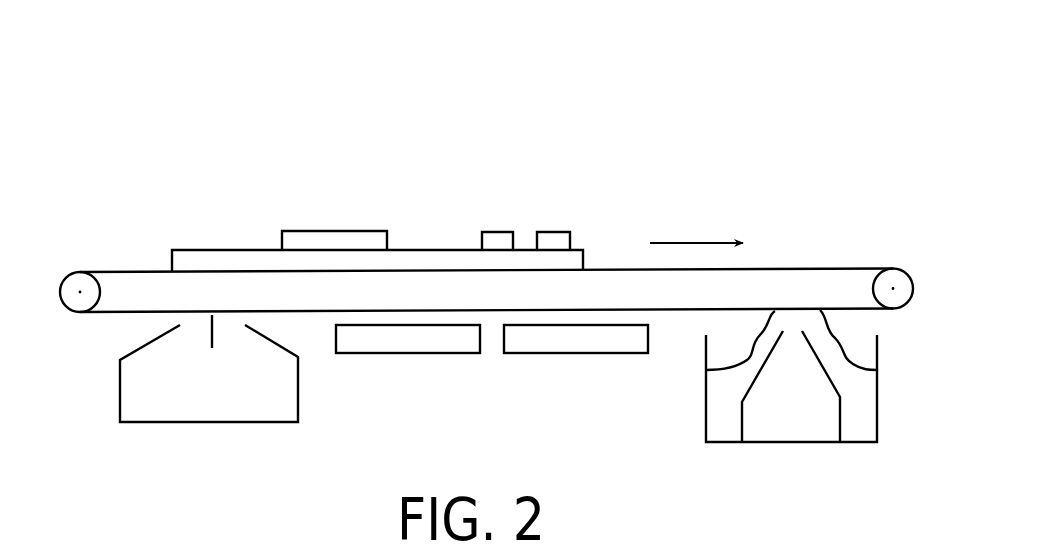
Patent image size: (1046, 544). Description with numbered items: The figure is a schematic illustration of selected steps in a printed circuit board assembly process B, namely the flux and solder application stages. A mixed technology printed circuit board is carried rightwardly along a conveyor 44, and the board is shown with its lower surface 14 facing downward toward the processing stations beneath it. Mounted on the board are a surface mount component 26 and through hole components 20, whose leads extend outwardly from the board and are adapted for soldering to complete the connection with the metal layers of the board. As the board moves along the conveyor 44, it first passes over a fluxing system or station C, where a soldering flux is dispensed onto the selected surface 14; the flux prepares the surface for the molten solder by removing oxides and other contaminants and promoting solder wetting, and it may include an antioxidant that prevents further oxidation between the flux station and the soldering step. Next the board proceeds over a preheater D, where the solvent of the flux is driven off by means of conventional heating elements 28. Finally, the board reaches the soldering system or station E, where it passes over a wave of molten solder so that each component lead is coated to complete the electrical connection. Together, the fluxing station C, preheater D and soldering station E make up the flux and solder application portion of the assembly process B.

The second or lower surface 14 is at (204, 271).
The through hole component 20 is at (551, 232).
The surface mount components 26 is at (345, 238).
The heating elements 28 is at (438, 353).
The conveyor belt 44 is at (818, 268).
The assembly process B is at (452, 185).
The fluxing system or station C is at (196, 433).
The preheater D is at (492, 372).
The soldering system or station E is at (798, 452).